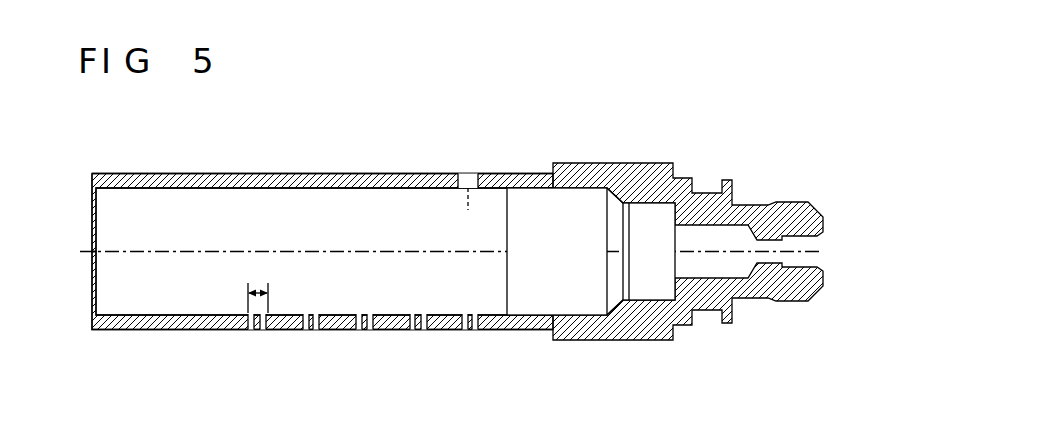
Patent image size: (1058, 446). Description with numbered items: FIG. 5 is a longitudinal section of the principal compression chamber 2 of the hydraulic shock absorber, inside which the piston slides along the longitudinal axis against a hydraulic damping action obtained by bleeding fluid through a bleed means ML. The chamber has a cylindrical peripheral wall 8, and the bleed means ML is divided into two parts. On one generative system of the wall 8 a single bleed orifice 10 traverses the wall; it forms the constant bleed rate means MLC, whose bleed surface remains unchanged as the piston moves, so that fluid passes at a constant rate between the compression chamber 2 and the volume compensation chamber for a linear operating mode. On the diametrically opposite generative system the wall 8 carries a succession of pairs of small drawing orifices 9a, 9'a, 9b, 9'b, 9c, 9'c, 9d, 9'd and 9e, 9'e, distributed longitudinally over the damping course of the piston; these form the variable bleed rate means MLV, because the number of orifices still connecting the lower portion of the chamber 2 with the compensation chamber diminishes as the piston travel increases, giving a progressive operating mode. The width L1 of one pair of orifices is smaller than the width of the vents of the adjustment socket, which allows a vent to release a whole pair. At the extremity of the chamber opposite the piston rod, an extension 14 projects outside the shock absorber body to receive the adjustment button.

The principal compression chamber 2 is at (457, 229).
The peripheral wall 8 is at (342, 176).
The bleed orifice 10 is at (474, 180).
The extension 14 is at (767, 212).
The drawing orifice 9a is at (252, 330).
The drawing orifice 9'a is at (214, 362).
The drawing orifice 9b is at (306, 330).
The drawing orifice 9'b is at (285, 365).
The drawing orifice 9c is at (359, 330).
The drawing orifice 9'c is at (382, 365).
The drawing orifice 9d is at (412, 330).
The drawing orifice 9'd is at (460, 363).
The drawing orifice 9e is at (466, 330).
The drawing orifice 9'e is at (534, 355).
The width of a pair of orifices L1 is at (258, 282).
The bleed means ML is at (797, 373).
The constant bleed rate means MLC is at (603, 72).
The variable bleed rate means MLV is at (612, 380).